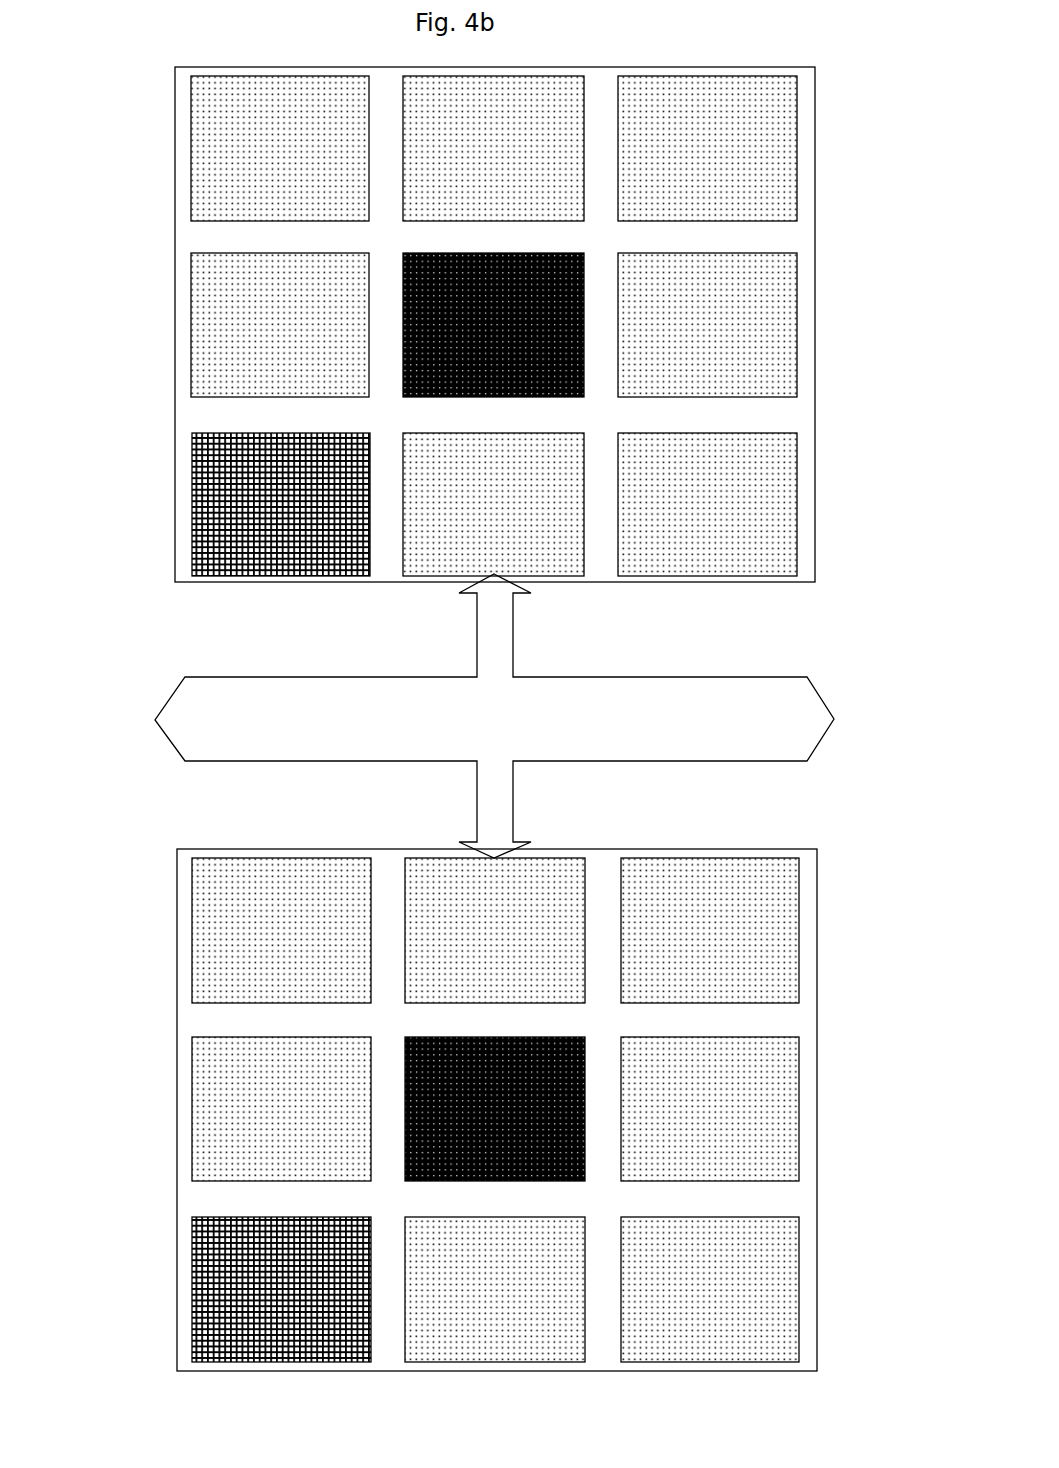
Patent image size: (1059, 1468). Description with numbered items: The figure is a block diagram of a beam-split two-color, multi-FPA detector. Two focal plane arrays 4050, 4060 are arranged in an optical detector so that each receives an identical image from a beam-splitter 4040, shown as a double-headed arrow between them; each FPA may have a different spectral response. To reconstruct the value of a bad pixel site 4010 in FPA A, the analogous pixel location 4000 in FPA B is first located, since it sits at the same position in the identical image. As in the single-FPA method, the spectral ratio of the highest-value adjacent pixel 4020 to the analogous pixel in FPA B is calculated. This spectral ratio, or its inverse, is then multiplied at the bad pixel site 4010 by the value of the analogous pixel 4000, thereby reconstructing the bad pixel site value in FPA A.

The analogous pixel location 4000 is at (487, 253).
The focal plane array 4050 is at (175, 328).
The highest-value adjacent pixel 4020 is at (192, 505).
The beam-splitter 4040 is at (495, 677).
The focal plane array 4060 is at (177, 1108).
The bad pixel site 4010 is at (585, 1108).